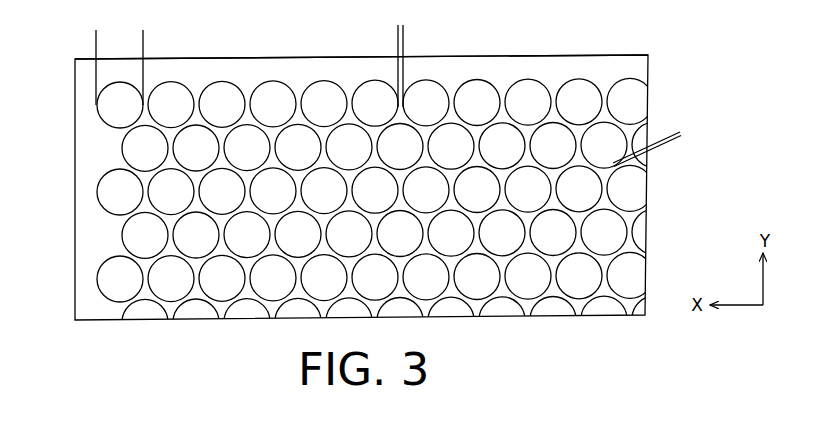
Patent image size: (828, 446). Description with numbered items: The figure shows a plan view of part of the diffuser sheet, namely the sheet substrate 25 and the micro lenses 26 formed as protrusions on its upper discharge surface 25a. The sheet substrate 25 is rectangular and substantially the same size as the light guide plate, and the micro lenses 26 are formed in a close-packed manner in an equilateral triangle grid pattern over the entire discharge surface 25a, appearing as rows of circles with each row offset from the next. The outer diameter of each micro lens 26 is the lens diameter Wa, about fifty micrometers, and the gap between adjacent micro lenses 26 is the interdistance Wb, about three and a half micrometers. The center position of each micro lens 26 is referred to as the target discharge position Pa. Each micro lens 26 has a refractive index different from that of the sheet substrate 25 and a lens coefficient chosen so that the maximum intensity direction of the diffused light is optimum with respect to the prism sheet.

The sheet substrate 25 is at (229, 57).
The discharge surface 25a is at (497, 57).
The micro lenses 26 is at (280, 80).
The target discharge position Pa is at (122, 103).
The lens diameter Wa is at (170, 40).
The interdistance Wb is at (440, 35).